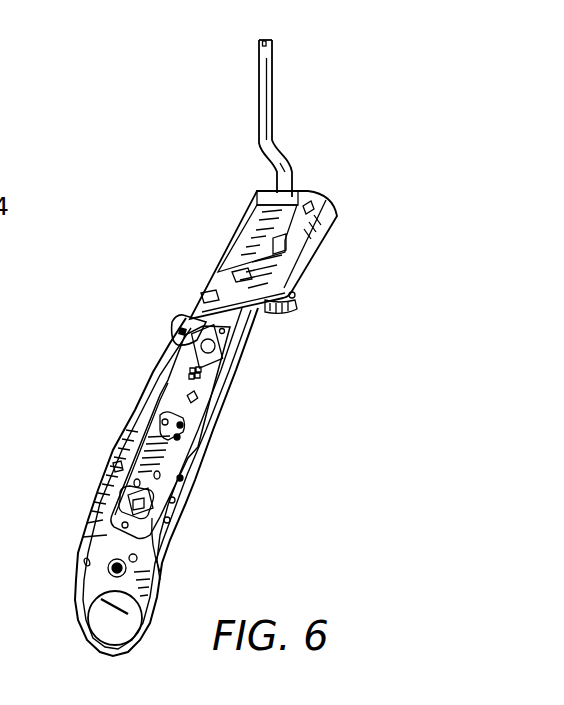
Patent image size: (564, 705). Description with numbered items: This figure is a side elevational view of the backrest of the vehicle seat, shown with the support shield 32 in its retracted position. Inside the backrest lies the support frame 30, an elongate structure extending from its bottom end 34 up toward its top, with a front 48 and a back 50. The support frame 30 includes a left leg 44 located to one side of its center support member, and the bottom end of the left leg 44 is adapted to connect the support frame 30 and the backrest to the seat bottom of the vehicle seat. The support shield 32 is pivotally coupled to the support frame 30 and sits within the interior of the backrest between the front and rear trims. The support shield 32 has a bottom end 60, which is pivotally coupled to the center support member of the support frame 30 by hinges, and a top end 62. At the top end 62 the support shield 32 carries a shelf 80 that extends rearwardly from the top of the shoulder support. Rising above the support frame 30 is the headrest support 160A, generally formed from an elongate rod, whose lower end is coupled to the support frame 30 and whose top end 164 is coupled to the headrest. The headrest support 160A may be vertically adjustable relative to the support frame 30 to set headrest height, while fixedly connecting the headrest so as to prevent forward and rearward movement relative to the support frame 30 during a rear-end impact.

The top end 164 is at (263, 38).
The headrest support 160A is at (273, 97).
The shelf 80 is at (305, 184).
The top end 62 is at (257, 194).
The support shield 32 is at (258, 238).
The bottom end 60 is at (182, 325).
The front 48 is at (147, 395).
The support frame 30 is at (111, 447).
The back 50 is at (225, 418).
The left leg 44 is at (173, 553).
The bottom end 34 is at (88, 649).